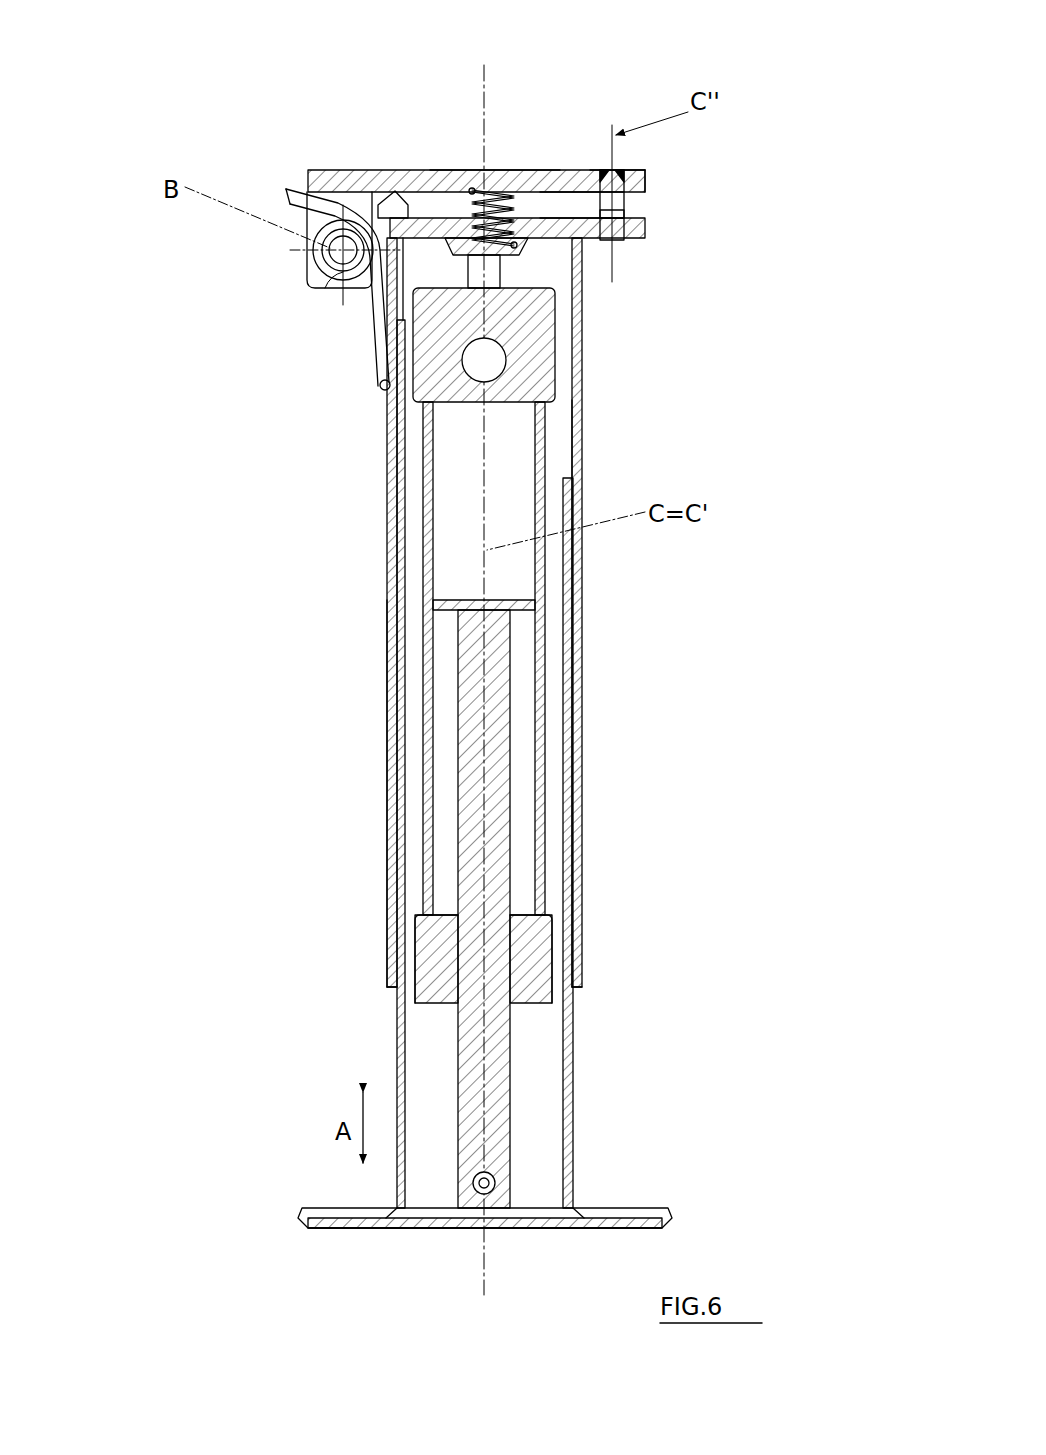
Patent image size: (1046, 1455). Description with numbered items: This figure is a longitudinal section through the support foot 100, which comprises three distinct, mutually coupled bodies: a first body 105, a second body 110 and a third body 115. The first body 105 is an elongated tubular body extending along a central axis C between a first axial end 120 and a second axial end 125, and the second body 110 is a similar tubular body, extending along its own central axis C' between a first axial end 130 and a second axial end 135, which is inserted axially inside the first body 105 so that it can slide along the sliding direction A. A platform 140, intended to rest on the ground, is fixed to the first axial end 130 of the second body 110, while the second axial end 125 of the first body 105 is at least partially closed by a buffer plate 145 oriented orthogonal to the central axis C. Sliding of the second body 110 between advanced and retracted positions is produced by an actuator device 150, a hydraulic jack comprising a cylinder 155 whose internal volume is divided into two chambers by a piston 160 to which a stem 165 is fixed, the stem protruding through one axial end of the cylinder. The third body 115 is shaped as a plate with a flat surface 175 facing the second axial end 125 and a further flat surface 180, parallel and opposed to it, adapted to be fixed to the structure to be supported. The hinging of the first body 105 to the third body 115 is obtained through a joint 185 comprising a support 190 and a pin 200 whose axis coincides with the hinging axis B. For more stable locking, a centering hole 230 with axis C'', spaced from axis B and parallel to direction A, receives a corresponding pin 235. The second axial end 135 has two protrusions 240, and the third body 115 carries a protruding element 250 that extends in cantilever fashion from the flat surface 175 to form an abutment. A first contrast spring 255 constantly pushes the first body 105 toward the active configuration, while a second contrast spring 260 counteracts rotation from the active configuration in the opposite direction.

The support foot 100 is at (297, 142).
The first body 105 is at (581, 661).
The second body 110 is at (575, 1078).
The third body 115 is at (648, 180).
The first axial end 120 is at (391, 987).
The second axial end 125 is at (566, 216).
The first axial end 130 is at (531, 1231).
The second axial end 135 is at (405, 316).
The platform 140 is at (373, 1229).
The buffer plate 145 is at (647, 232).
The actuator device 150 is at (412, 797).
The cylinder 155 is at (549, 787).
The piston 160 is at (540, 606).
The stem 165 is at (506, 1120).
The flat surface 175 is at (541, 186).
The further flat surface 180 is at (364, 165).
The joint 185 is at (291, 287).
The support 190 is at (317, 243).
The pin 200 is at (342, 286).
The centering hole 230 is at (616, 250).
The pin 235 is at (626, 200).
The protrusions 240 is at (380, 345).
The protruding element 250 is at (520, 322).
The first contrast spring 255 is at (350, 290).
The second contrast spring 260 is at (501, 186).